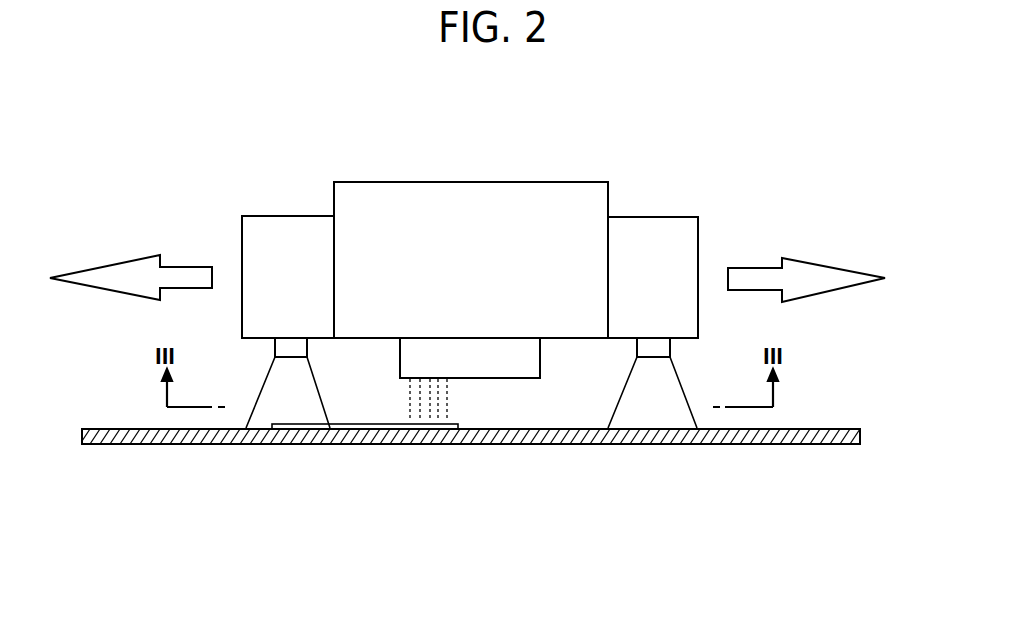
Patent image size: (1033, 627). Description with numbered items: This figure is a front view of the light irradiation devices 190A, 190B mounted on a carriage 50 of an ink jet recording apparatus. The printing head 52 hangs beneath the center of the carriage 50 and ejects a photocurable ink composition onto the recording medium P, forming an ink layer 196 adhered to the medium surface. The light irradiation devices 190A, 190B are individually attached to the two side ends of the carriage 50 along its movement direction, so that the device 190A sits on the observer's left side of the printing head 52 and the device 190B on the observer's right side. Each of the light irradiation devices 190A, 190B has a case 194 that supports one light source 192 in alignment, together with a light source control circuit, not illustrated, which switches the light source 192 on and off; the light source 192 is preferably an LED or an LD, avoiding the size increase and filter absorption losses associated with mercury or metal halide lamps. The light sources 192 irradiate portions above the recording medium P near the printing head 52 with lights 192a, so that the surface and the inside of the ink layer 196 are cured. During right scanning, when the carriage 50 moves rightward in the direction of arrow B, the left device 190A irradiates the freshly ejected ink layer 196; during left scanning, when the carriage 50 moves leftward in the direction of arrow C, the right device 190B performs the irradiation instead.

The carriage 50 is at (530, 192).
The printing head 52 is at (510, 365).
The light irradiation device 190A is at (230, 244).
The light irradiation device 190B is at (708, 247).
The light source 192 is at (298, 347).
The light 192a is at (292, 410).
The case 194 is at (257, 222).
The ink layer 196 is at (390, 422).
The recording medium P is at (793, 445).
The arrow B is at (838, 265).
The arrow C is at (100, 265).